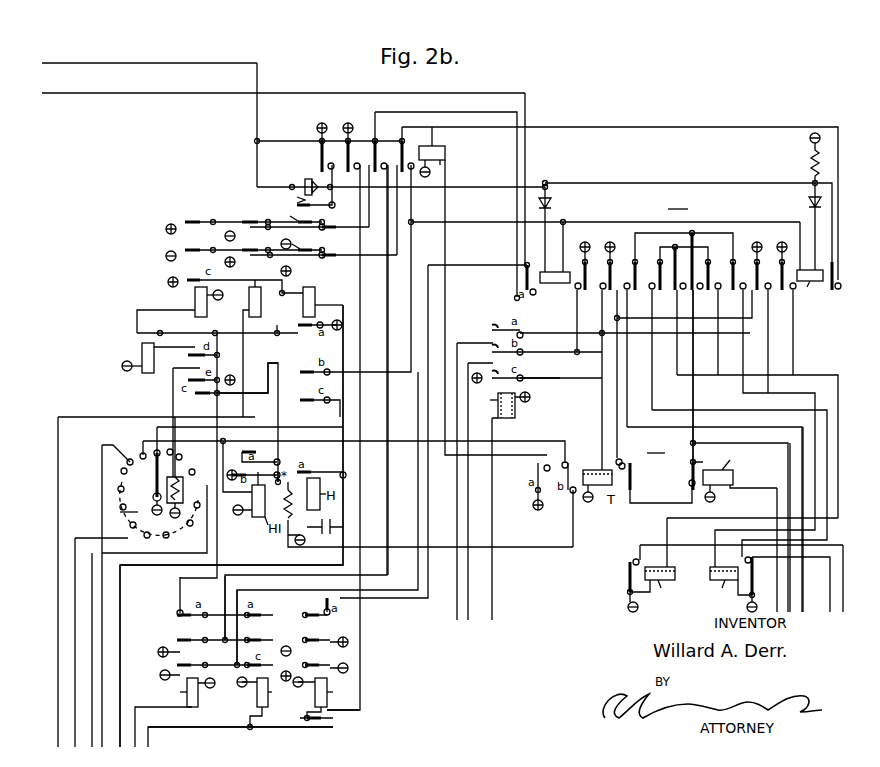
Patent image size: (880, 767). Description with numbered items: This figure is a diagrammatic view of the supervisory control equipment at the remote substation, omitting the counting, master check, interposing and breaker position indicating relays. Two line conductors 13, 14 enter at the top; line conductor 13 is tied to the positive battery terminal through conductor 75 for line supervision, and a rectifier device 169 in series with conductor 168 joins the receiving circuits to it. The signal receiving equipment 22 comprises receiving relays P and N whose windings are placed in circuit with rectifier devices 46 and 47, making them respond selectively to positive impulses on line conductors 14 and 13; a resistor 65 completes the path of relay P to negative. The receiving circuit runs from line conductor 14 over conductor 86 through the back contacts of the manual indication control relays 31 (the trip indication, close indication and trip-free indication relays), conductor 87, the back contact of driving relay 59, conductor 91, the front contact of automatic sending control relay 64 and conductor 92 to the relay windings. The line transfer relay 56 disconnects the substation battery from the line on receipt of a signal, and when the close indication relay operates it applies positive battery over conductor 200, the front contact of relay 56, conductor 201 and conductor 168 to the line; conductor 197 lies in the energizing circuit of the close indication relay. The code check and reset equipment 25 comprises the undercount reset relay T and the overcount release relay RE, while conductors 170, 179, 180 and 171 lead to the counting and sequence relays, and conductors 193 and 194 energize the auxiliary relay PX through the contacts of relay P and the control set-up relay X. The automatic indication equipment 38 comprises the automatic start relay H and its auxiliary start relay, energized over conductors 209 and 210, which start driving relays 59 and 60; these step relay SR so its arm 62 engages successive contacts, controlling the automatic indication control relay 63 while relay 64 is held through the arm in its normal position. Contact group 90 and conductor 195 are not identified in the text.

The line conductor 13 is at (158, 63).
The line conductor 14 is at (158, 93).
The conductor 75 is at (308, 141).
The rectifier device 169 is at (305, 184).
The line transfer relay 56 is at (445, 160).
The conductor 201 is at (658, 127).
The conductor 168 is at (648, 183).
The signal receiving equipment 22 is at (690, 310).
The resistor 65 is at (808, 161).
The rectifier device 47 is at (556, 229).
The rectifier device 46 is at (807, 203).
The conductor 92 is at (499, 222).
The conductor 86 is at (502, 265).
The relay contacts 90 is at (333, 229).
The driving relay 59 is at (195, 297).
The automatic indication control relay 63 is at (249, 299).
The automatic sending control relay 64 is at (303, 300).
The driving relay 60 is at (142, 350).
The conductor 91 is at (260, 374).
The automatic indication equipment 38 is at (122, 407).
The arm 62 is at (154, 485).
The conductor 87 is at (217, 538).
The conductor 209 is at (343, 450).
The conductor 210 is at (532, 441).
The conductor 194 is at (558, 378).
The conductor 170 is at (748, 370).
The conductor 180 is at (696, 393).
The conductor 179 is at (744, 426).
The conductor 171 is at (746, 444).
The code check and reset equipment 25 is at (698, 396).
The wire 195 is at (660, 548).
The conductor 193 is at (706, 511).
The conductor 200 is at (388, 596).
The conductor 197 is at (148, 742).
The manual indication control relays 31 is at (228, 748).